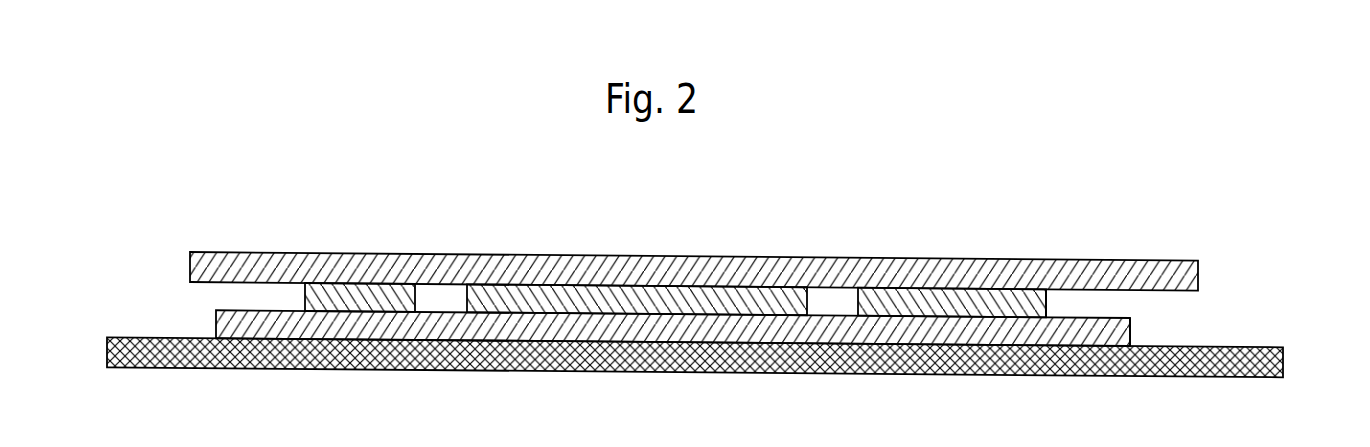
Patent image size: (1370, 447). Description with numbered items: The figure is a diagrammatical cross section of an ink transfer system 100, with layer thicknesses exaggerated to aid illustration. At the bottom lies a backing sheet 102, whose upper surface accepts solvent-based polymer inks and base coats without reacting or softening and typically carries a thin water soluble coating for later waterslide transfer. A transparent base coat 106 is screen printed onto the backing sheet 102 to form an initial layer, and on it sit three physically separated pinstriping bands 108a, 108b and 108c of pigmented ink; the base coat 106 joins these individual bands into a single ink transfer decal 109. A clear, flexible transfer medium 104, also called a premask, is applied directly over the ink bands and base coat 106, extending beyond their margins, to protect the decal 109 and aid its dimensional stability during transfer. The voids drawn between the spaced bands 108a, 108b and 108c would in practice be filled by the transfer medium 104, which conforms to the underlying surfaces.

The ink transfer system 100 is at (912, 225).
The backing sheet 102 is at (133, 337).
The transfer medium 104 is at (199, 250).
The base coat 106 is at (220, 308).
The spaced band of pinstriping 108a is at (322, 285).
The spaced band of pinstriping 108b is at (713, 283).
The spaced band of pinstriping 108c is at (973, 290).
The ink transfer decal 109 is at (1047, 308).